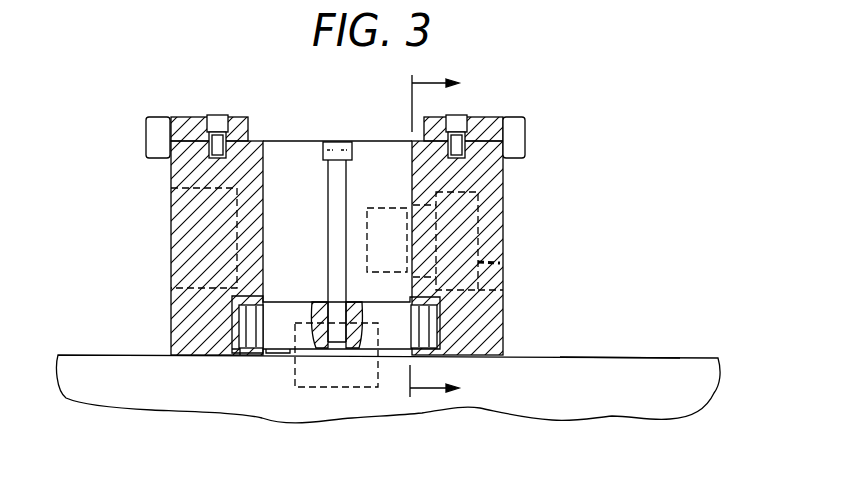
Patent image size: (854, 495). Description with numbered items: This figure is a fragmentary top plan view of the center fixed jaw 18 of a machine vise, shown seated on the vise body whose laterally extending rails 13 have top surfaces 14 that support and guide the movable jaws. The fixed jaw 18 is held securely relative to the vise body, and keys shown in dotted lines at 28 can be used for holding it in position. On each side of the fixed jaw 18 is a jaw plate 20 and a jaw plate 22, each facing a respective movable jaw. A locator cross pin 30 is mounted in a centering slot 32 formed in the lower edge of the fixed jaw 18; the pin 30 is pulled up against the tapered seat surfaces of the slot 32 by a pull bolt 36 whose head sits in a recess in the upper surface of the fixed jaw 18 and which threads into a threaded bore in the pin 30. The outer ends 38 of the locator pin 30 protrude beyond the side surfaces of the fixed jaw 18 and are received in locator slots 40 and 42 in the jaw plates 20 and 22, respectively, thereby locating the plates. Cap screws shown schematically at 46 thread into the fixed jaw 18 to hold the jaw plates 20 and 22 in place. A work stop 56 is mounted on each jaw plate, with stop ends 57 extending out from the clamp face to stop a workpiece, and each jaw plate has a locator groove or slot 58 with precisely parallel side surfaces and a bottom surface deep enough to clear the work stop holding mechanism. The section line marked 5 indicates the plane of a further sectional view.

The rails 13 is at (557, 400).
The top surfaces 14 is at (610, 358).
The fixed jaw 18 is at (379, 162).
The jaw plate 20 is at (493, 178).
The jaw plate 22 is at (190, 231).
The keys 28 is at (378, 387).
The locator cross pin 30 is at (288, 342).
The centering slot 32 is at (277, 353).
The pull bolt 36 is at (330, 203).
The outer ends 38 is at (248, 313).
The locator slot 40 is at (440, 349).
The locator slot 42 is at (232, 356).
The cap screws 46 is at (500, 263).
The work stop 56 is at (190, 124).
The stop ends 57 is at (150, 146).
The locator groove 58 is at (205, 150).
The section line 5- 5 is at (446, 240).